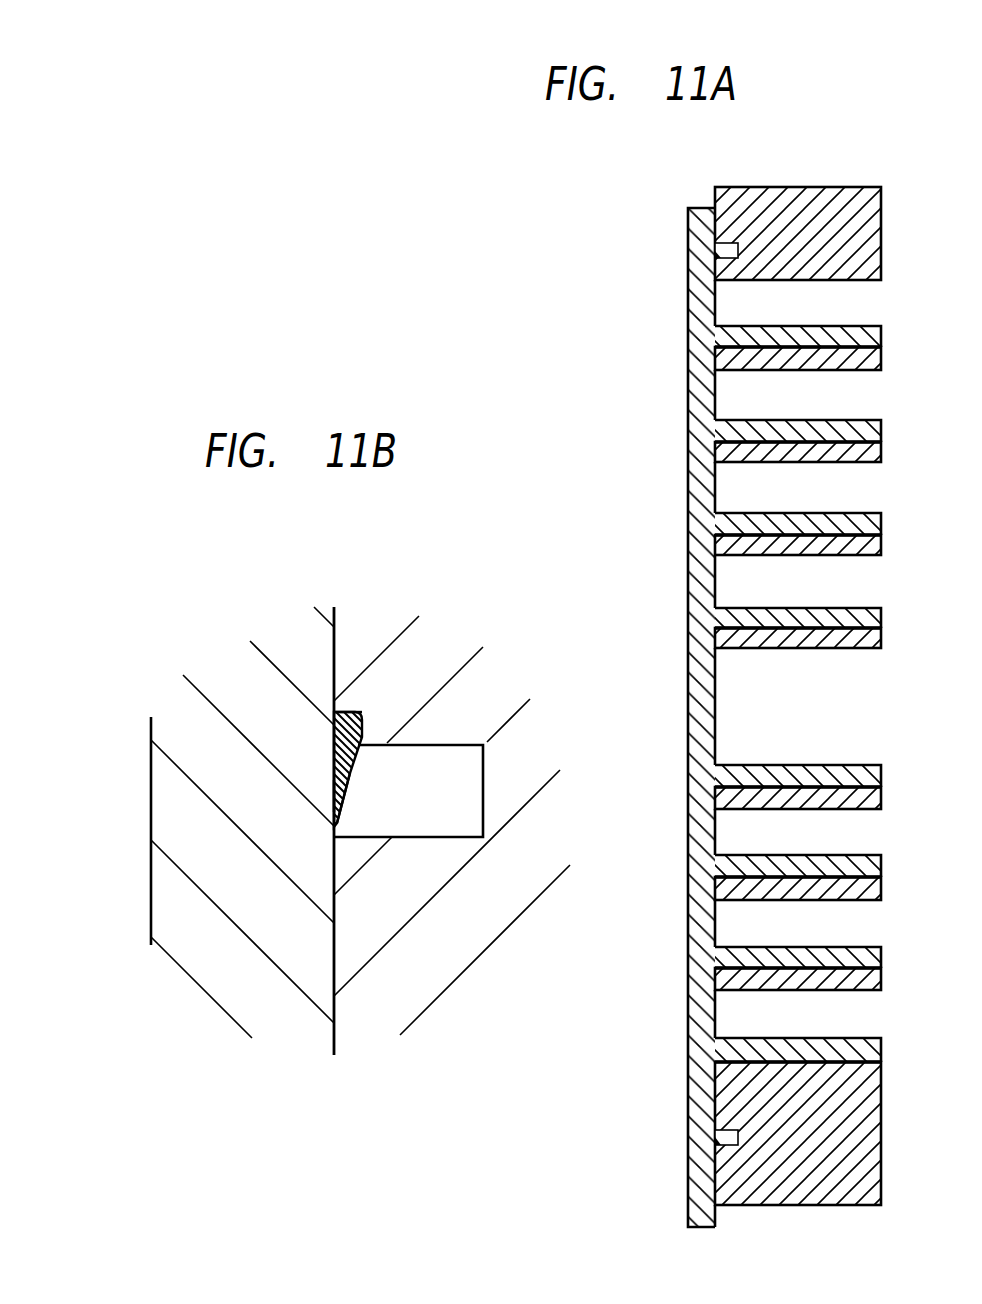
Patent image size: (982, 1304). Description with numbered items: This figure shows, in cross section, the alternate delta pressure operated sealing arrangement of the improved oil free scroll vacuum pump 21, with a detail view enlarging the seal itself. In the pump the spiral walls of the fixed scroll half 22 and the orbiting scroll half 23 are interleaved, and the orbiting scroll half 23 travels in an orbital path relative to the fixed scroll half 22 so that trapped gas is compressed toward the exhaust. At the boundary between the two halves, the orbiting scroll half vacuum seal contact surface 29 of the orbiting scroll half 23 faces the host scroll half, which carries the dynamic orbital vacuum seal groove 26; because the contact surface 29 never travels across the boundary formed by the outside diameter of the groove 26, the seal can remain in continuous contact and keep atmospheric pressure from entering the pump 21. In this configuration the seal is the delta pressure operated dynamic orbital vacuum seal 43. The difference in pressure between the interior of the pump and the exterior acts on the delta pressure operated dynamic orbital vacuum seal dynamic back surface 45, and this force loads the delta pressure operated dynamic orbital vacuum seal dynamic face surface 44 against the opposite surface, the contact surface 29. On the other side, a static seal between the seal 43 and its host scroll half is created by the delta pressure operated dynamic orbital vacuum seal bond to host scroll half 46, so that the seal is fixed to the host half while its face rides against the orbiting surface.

In FIG. 11A, the improved oil free scroll vacuum pump 21 is at (740, 187).
In FIG. 11B, the fixed scroll half 22 is at (506, 934).
In FIG. 11B, the orbiting scroll half 23 is at (222, 757).
In FIG. 11B, the dynamic orbital vacuum seal groove 26 is at (468, 745).
In FIG. 11B, the orbiting scroll half vacuum seal contact surface 29 is at (336, 646).
In FIG. 11B, the delta pressure operated dynamic orbital vacuum seal 43 is at (357, 750).
In FIG. 11B, the delta pressure operated dynamic orbital vacuum seal dynamic face surface 44 is at (334, 792).
In FIG. 11B, the delta pressure operated dynamic orbital vacuum seal dynamic back surface 45 is at (338, 782).
In FIG. 11B, the delta pressure operated dynamic orbital vacuum seal bond to host scroll half 46 is at (362, 712).